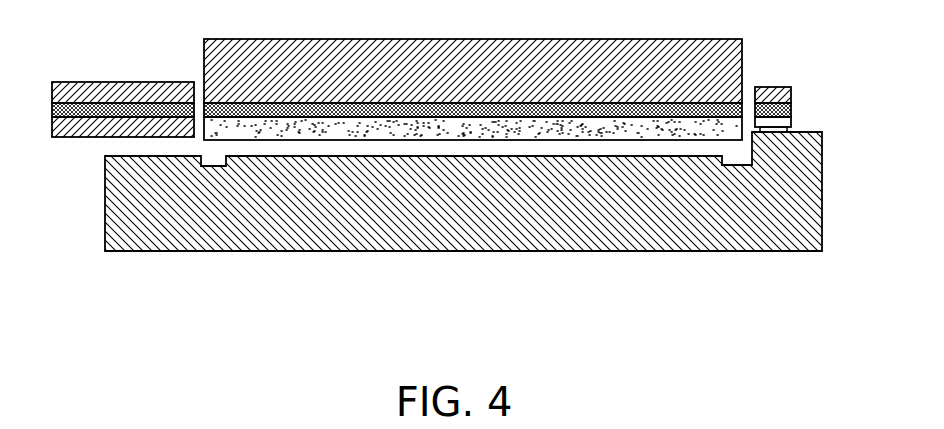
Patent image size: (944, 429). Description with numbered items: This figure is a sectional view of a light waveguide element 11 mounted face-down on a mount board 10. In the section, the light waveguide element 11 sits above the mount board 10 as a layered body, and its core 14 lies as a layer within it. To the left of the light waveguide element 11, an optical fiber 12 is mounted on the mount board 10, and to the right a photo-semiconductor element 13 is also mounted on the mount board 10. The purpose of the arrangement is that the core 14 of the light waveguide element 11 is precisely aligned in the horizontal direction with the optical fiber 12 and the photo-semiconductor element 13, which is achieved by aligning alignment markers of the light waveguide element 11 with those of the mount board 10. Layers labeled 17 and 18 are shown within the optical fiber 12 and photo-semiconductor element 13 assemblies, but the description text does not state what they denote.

The mount board 10 is at (775, 233).
The light waveguide element 11 is at (473, 173).
The optical fiber 12 is at (123, 164).
The photo-semiconductor element 13 is at (790, 97).
The core 14 is at (323, 117).
The adhesive layer 17 is at (90, 112).
The adhesive layer 18 is at (793, 100).